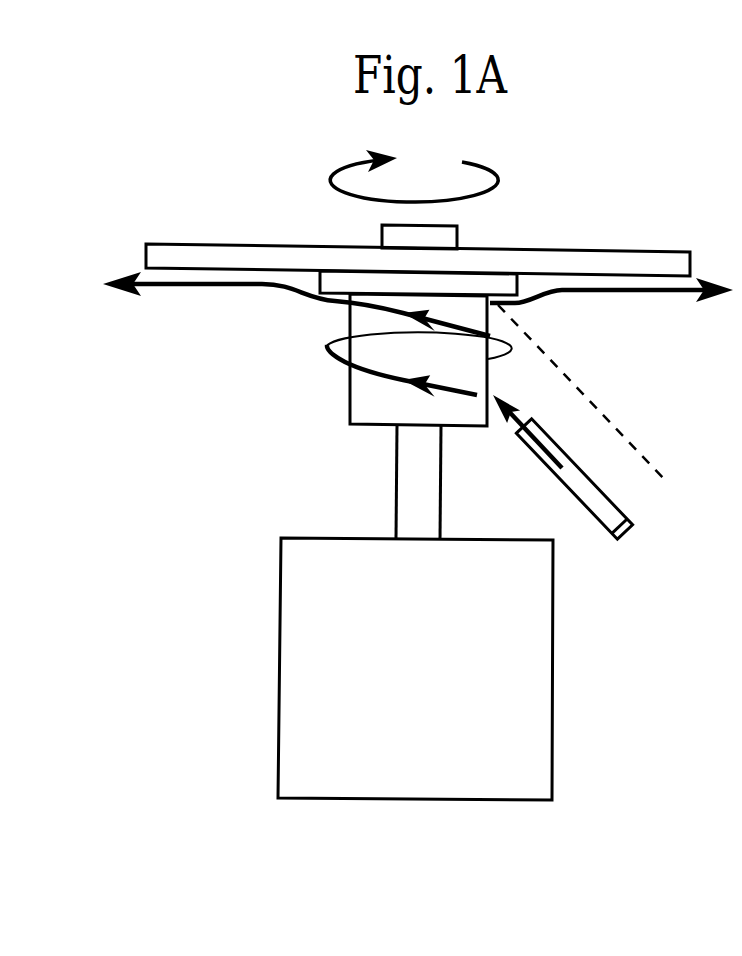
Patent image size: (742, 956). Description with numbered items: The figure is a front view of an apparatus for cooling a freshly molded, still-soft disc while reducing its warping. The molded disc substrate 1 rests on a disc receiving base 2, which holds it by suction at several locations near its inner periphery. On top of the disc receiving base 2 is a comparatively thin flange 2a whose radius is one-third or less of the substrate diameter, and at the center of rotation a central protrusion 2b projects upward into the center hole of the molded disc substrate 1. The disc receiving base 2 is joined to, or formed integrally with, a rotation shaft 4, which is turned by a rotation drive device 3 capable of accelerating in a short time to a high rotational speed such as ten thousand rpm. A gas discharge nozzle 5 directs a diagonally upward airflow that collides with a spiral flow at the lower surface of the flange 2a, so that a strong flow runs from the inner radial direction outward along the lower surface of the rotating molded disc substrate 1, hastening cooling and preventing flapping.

The molded disc substrate 1 is at (615, 250).
The disc receiving base 2 is at (357, 398).
The flange 2a is at (337, 282).
The central protrusion 2b is at (458, 233).
The rotation drive device 3 is at (505, 680).
The rotation shaft 4 is at (403, 483).
The gas discharge nozzle 5 is at (627, 530).